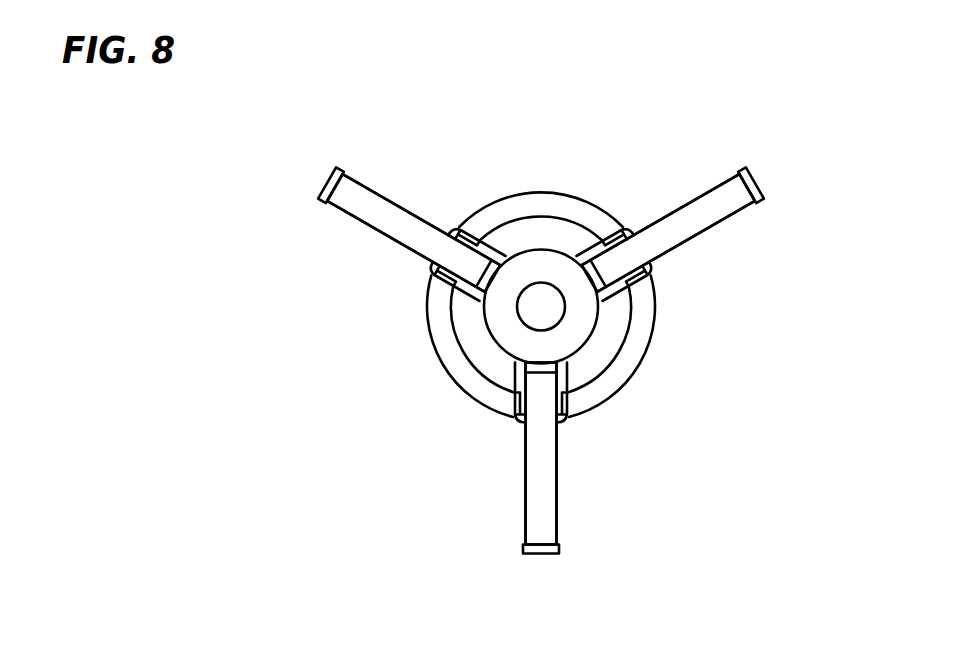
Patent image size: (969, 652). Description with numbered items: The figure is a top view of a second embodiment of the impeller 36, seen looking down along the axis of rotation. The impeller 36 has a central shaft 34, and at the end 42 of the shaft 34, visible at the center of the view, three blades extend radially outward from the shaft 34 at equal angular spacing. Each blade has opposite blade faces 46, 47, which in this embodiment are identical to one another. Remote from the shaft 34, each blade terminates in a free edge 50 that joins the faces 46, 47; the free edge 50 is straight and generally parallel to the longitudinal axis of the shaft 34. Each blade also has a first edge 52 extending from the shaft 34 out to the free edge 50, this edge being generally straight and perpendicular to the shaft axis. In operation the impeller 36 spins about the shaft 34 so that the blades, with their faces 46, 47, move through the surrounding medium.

The shaft 34 is at (595, 333).
The impeller 36 is at (603, 124).
The end of the shaft 42 is at (541, 300).
The blade face 46 is at (705, 192).
The blade face 47 is at (363, 185).
The free edge 50 is at (753, 180).
The first edge 52 is at (693, 235).